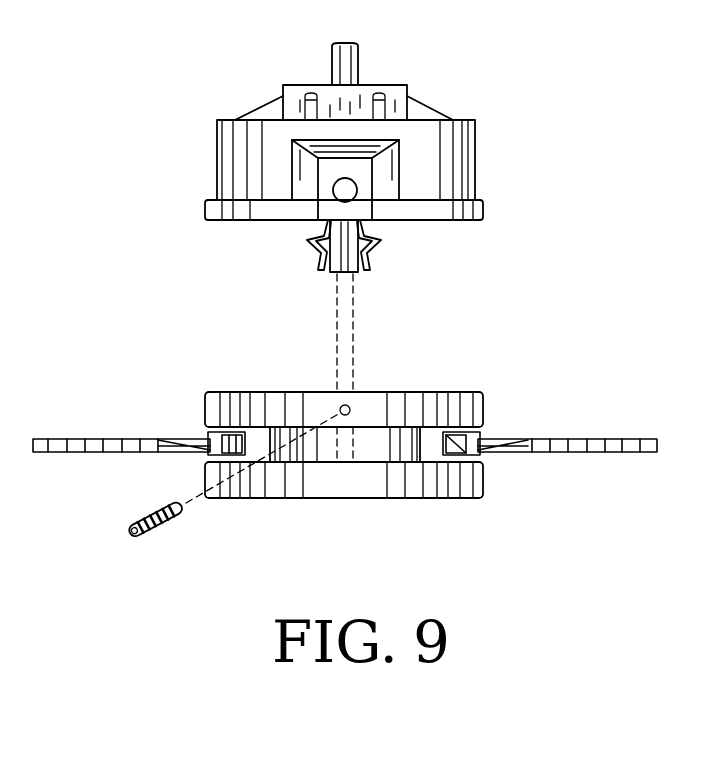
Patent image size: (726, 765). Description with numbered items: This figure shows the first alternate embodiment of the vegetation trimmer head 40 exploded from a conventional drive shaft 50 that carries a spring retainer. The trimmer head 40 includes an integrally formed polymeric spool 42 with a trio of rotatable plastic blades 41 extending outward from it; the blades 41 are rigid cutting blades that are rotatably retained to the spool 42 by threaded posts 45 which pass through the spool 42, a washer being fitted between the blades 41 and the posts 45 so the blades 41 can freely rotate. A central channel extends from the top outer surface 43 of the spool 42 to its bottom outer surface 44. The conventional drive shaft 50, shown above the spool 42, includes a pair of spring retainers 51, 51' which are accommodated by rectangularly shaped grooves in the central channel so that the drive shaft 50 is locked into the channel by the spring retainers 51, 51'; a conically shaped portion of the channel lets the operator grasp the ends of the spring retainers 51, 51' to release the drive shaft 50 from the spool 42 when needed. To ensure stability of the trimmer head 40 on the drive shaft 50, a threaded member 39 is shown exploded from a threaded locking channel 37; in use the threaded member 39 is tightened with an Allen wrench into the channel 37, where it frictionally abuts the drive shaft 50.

The threaded locking channel 37 is at (322, 386).
The threaded member 39 is at (153, 515).
The vegetation trimmer head 40 is at (538, 302).
The rotatable plastic blades 41 is at (125, 438).
The polymeric spool 42 is at (505, 397).
The top outer surface 43 is at (372, 392).
The bottom outer surface 44 is at (367, 498).
The threaded posts 45 is at (480, 459).
The conventional drive shaft 50 is at (288, 237).
The spring retainer 51 is at (292, 265).
The spring retainer 51' is at (405, 252).